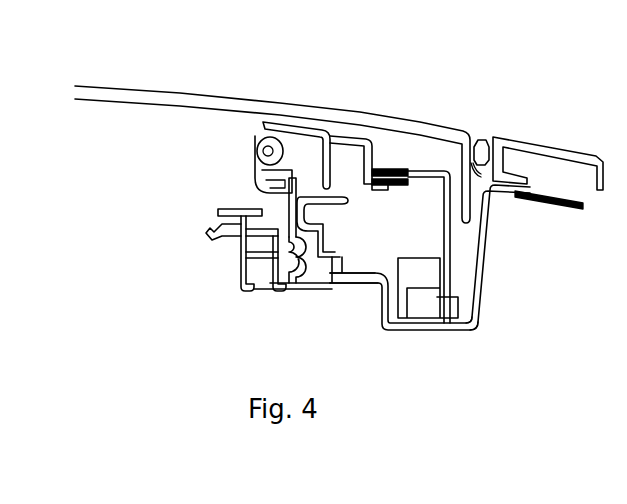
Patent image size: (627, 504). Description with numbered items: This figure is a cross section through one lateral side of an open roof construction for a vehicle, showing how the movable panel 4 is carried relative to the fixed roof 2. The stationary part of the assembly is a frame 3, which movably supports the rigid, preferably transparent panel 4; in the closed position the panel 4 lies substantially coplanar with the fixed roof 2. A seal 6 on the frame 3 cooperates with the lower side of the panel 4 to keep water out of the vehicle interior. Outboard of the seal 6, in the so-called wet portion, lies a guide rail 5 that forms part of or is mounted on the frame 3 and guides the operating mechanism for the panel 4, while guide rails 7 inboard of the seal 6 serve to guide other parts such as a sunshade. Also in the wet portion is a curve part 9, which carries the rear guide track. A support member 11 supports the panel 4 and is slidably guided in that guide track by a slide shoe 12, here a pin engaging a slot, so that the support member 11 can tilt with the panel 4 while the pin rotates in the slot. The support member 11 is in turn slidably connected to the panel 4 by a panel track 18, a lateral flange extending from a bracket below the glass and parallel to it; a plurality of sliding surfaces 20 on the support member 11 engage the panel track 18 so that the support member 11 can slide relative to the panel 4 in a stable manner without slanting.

The fixed roof 2 is at (548, 142).
The frame 3 is at (483, 255).
The panel 4 is at (167, 90).
The guide rail 5 is at (458, 303).
The seal 6 is at (253, 140).
The guide rails 7 is at (235, 242).
The curve part 9 is at (378, 278).
The support member 11 is at (442, 167).
The slide shoe 12 is at (423, 298).
The panel track 18 is at (343, 133).
The sliding surfaces 20 is at (382, 165).